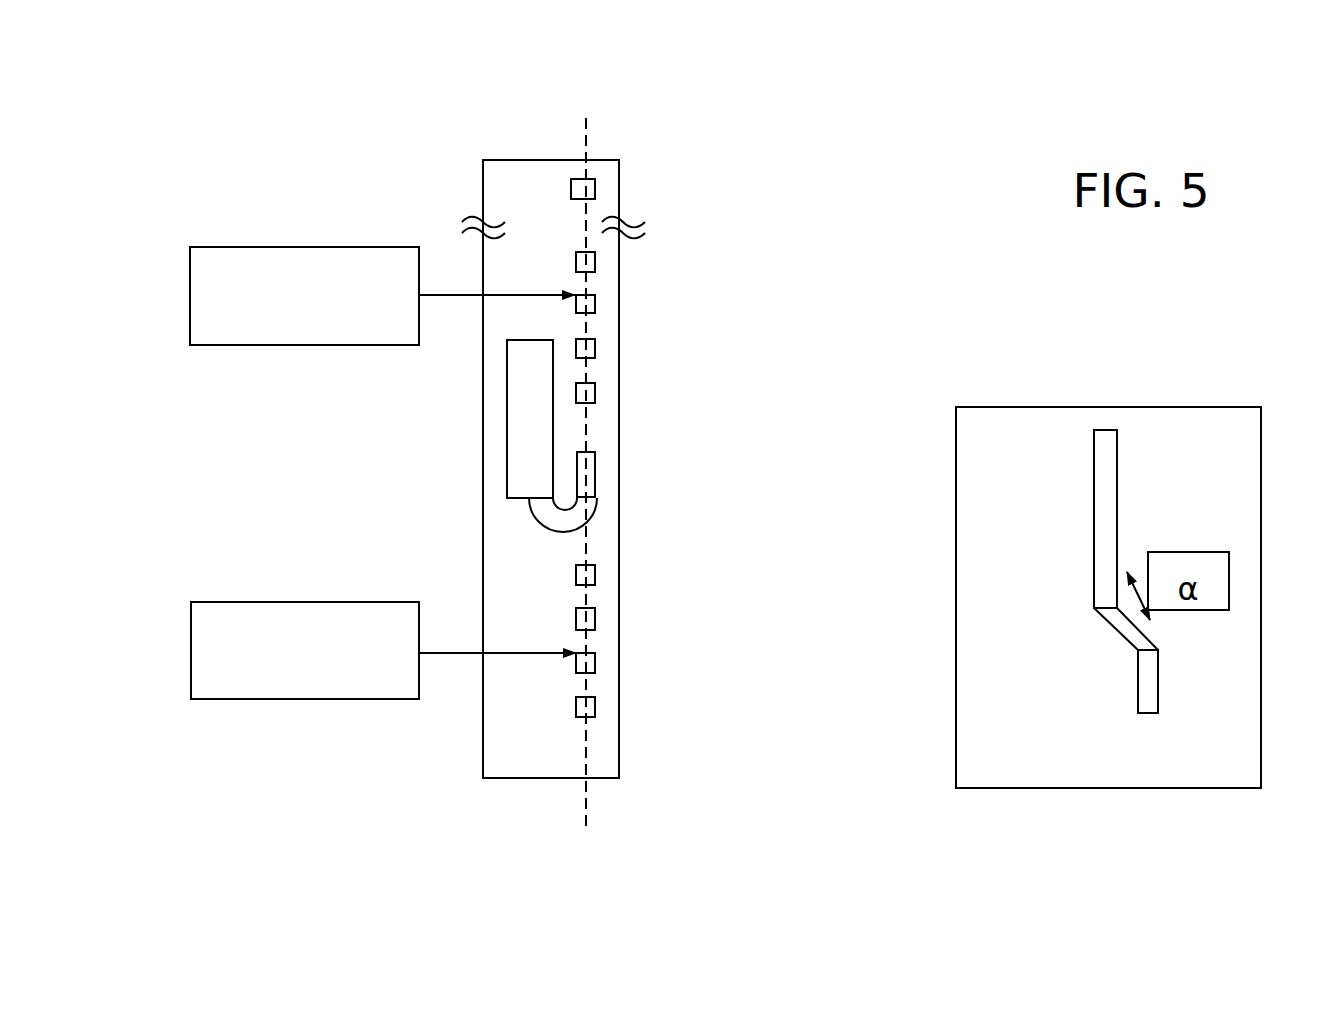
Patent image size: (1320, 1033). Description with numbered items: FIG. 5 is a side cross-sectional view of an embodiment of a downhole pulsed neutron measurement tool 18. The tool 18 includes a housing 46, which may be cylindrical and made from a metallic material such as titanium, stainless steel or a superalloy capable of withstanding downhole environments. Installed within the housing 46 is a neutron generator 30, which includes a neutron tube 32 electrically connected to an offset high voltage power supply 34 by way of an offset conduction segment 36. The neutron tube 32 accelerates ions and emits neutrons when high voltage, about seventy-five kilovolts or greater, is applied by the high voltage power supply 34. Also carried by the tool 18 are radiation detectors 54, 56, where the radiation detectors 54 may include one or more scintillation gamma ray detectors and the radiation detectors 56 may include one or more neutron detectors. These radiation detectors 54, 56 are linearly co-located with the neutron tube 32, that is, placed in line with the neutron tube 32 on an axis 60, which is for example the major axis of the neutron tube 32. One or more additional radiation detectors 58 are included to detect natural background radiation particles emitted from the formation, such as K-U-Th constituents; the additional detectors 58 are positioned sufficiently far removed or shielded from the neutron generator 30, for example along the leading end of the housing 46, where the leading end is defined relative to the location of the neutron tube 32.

The tool 18 is at (310, 168).
The housing 46 is at (537, 160).
The axis 60 is at (587, 797).
The additional radiation detectors 58 is at (600, 189).
The radiation detectors 56 is at (249, 248).
The radiation detectors 54 is at (315, 697).
The neutron generator 30 is at (520, 513).
The high voltage power supply 34 is at (1092, 470).
The neutron tube 32 is at (597, 473).
The offset conduction segment 36 is at (592, 513).